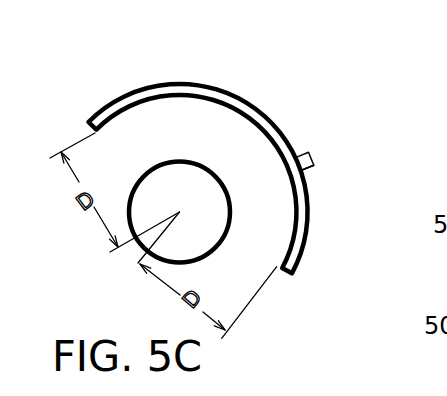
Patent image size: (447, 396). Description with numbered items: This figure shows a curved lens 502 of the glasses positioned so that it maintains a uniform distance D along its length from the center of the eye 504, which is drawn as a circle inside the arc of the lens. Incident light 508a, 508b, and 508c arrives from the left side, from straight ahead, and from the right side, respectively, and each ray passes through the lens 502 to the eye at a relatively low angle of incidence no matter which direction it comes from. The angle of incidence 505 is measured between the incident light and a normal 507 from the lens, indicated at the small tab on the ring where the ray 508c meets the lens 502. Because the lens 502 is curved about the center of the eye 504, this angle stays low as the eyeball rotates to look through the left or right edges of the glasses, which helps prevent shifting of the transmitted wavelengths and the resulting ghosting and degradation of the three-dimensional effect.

The curved lens 502 is at (88, 110).
The center of the eye 504 is at (139, 248).
The angle of incidence 505 is at (308, 152).
The normal from the lens 507 is at (309, 169).
The incident light 508a is at (147, 171).
The incident light 508b is at (180, 160).
The incident light 508c is at (232, 201).